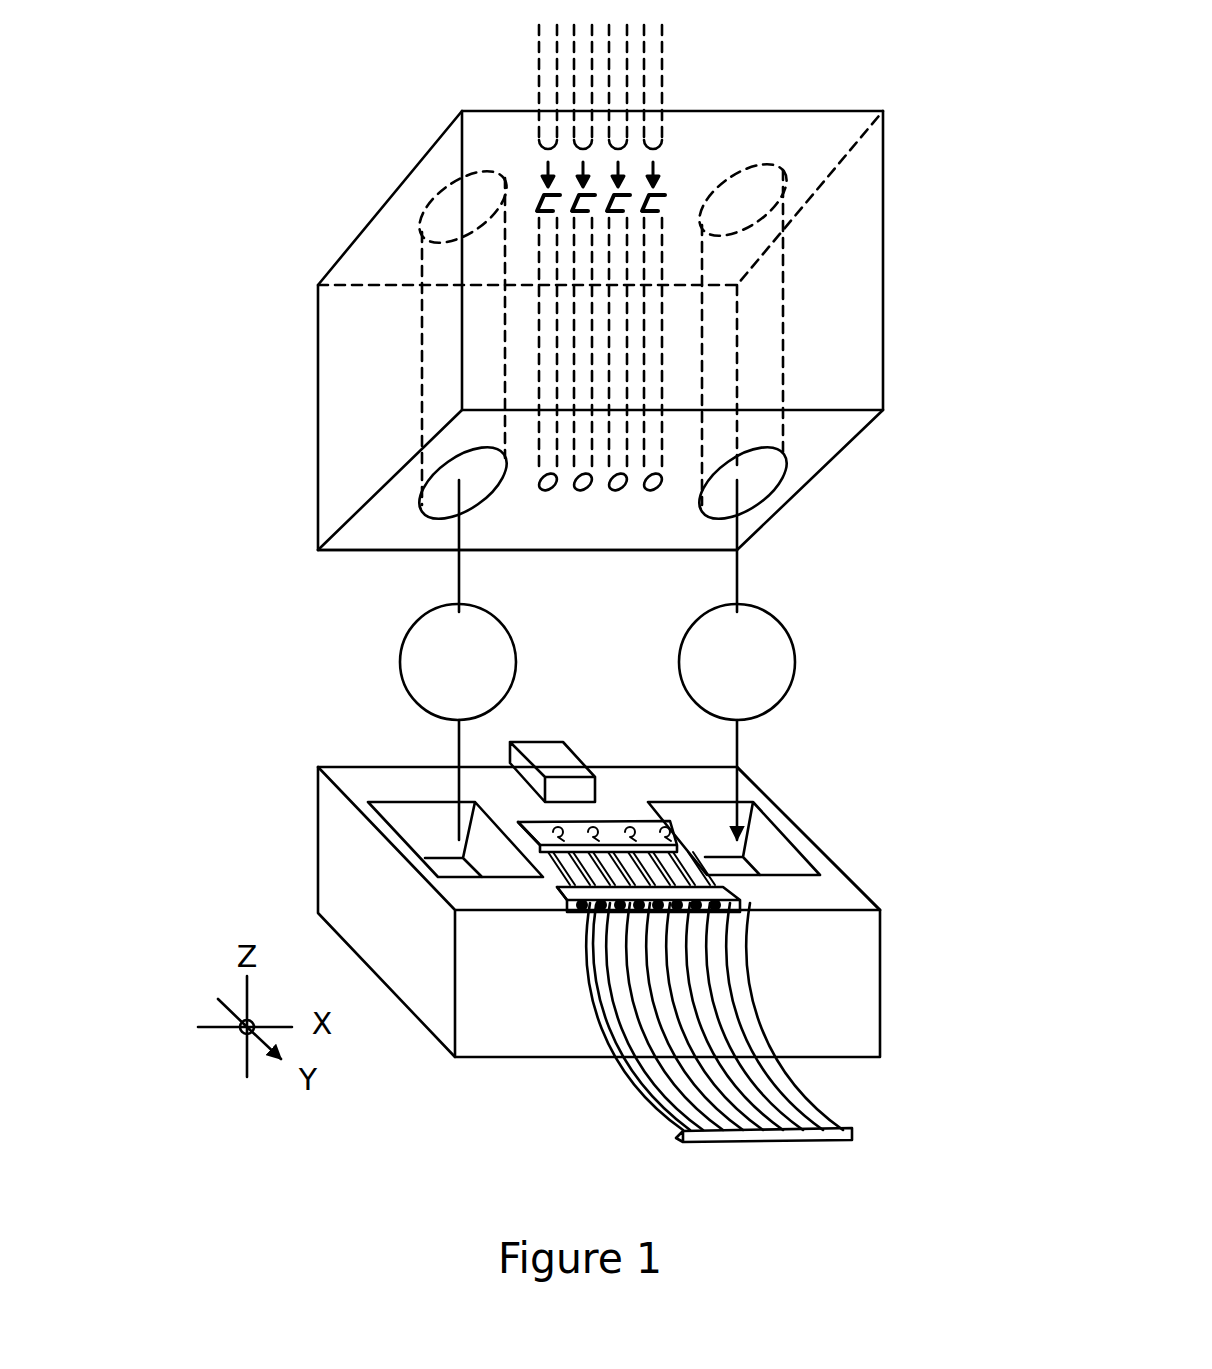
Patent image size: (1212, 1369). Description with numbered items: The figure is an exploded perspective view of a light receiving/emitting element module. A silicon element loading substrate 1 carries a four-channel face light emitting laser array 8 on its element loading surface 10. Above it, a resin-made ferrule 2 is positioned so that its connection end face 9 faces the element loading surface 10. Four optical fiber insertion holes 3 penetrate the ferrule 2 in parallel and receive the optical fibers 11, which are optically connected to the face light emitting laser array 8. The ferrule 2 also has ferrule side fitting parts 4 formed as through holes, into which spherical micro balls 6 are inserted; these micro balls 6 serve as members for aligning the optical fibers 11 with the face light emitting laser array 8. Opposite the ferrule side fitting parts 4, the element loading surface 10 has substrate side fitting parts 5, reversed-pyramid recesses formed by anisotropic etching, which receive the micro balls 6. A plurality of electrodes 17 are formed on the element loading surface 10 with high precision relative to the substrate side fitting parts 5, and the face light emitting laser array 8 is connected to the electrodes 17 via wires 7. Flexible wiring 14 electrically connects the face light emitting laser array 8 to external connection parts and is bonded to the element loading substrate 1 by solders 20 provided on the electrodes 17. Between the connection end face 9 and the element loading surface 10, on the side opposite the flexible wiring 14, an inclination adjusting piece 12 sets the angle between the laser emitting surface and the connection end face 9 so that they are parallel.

The element loading substrate 1 is at (855, 998).
The ferrule 2 is at (858, 362).
The optical fiber insertion holes 3 is at (534, 194).
The ferrule side fitting parts 4 is at (440, 372).
The substrate side fitting parts 5 is at (415, 830).
The micro balls 6 is at (428, 655).
The wires 7 is at (642, 856).
The face light emitting laser array 8 is at (617, 830).
The connection end face 9 is at (820, 437).
The element loading surface 10 is at (838, 900).
The optical fibers 11 is at (546, 90).
The inclination adjusting piece 12 is at (553, 750).
The flexible wiring 14 is at (617, 1037).
The electrodes 17 is at (530, 860).
The solders 20 is at (790, 215).